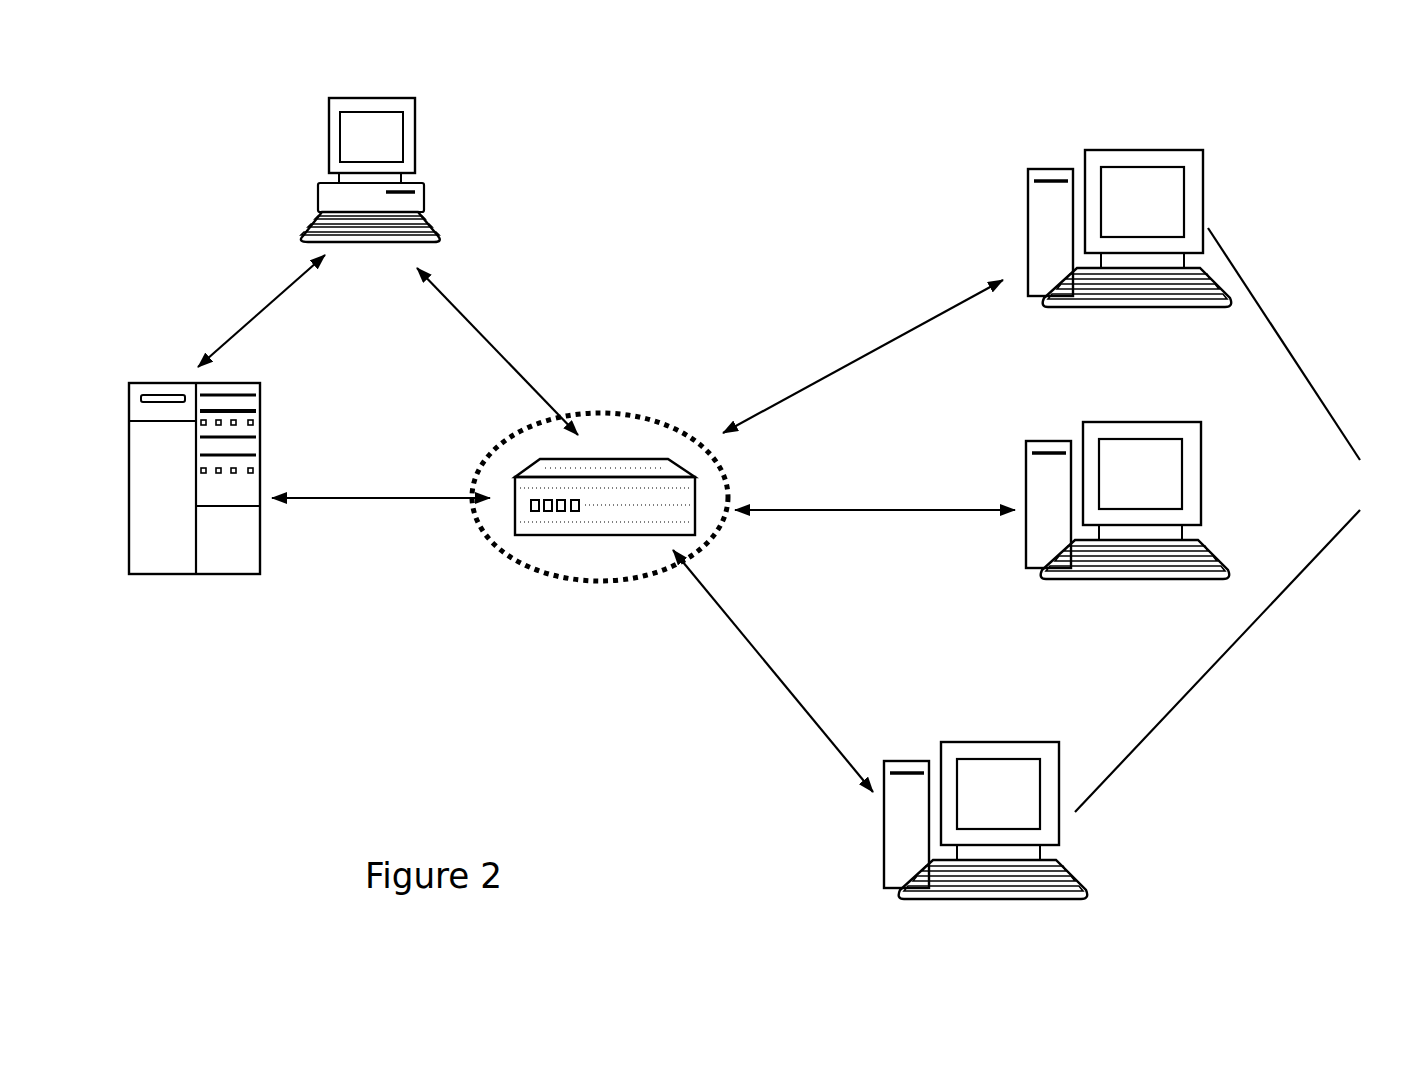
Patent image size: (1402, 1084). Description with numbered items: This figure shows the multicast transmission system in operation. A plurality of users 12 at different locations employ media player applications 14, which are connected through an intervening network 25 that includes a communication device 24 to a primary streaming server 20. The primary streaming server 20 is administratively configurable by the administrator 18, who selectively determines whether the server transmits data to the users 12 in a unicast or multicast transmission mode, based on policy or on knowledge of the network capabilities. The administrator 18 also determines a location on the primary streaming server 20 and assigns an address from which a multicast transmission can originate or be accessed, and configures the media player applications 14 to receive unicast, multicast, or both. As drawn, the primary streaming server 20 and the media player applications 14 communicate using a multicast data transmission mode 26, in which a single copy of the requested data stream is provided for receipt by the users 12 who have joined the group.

The users 12 is at (1202, 486).
The media player applications 14 is at (1057, 524).
The administrator 18 is at (415, 150).
The primary streaming server 20 is at (181, 574).
The communication device 24 is at (592, 535).
The intervening network 25 is at (600, 477).
The multicast data transmission mode 26 is at (375, 492).